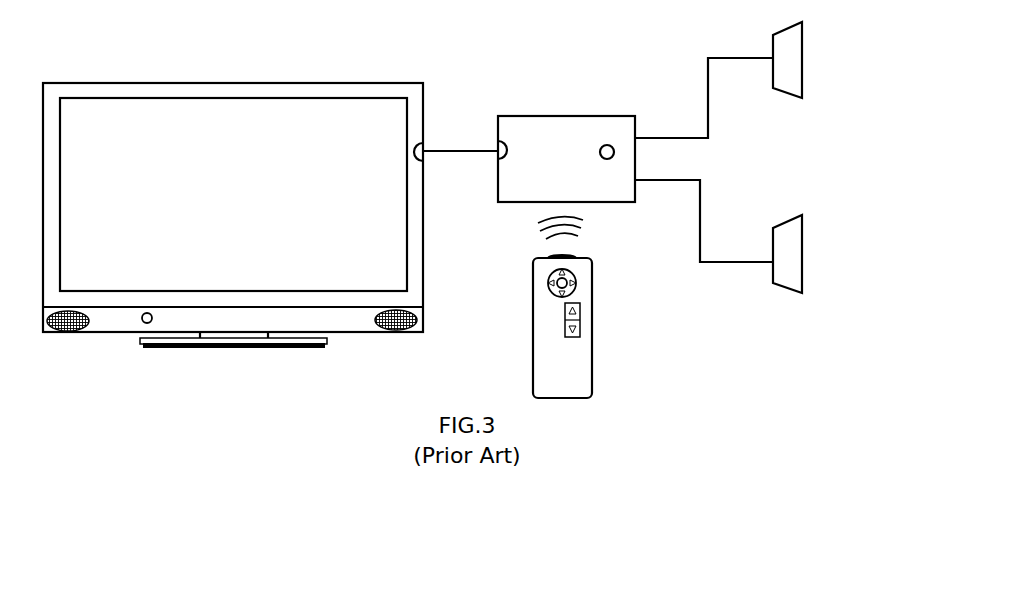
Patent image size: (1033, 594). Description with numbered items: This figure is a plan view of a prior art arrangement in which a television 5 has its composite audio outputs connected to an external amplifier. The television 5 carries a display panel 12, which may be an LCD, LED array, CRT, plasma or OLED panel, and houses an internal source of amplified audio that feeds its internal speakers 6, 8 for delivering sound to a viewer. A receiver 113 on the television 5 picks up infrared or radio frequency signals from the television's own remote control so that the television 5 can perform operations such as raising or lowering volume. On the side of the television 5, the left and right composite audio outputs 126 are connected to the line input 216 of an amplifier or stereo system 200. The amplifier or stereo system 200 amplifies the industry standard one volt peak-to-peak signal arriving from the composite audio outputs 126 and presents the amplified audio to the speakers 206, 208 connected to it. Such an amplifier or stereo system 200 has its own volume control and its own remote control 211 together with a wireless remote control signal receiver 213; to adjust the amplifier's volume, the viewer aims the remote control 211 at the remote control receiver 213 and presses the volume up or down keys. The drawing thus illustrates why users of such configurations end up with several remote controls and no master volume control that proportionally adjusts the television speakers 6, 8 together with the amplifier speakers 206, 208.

The television 5 is at (445, 56).
The display panel 12 is at (243, 120).
The composite audio outputs 126 is at (425, 157).
The amplifier or stereo system 200 is at (540, 116).
The line input 216 is at (499, 145).
The wireless remote control signal receiver 213 is at (605, 144).
The speaker 206 is at (803, 55).
The speaker 208 is at (803, 247).
The remote control 211 is at (592, 360).
The internal speaker 6 is at (78, 327).
The internal speaker 8 is at (398, 325).
The receiver 113 is at (146, 323).